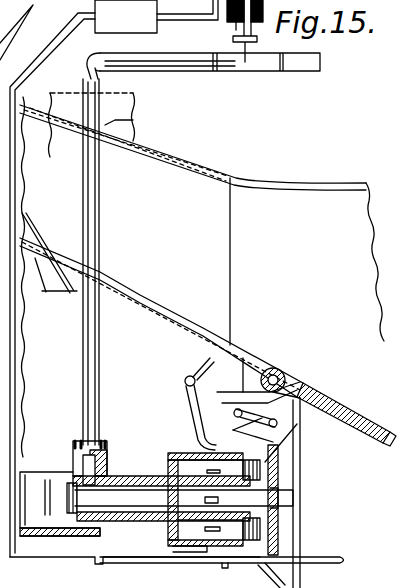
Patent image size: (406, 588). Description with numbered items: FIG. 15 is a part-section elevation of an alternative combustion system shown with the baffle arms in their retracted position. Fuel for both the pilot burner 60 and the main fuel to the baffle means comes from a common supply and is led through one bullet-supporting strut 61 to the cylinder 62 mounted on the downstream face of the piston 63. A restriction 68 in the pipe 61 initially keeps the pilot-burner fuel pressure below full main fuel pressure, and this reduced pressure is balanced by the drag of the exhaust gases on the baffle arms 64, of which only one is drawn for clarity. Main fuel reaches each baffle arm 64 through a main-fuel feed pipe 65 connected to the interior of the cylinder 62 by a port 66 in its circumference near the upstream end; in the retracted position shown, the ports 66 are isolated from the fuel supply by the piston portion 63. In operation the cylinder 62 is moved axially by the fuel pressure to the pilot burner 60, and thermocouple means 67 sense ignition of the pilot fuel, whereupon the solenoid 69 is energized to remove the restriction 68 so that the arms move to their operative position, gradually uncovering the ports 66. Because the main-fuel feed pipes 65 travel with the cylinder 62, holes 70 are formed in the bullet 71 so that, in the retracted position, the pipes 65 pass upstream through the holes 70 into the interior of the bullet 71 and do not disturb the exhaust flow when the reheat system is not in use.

The pilot burner 60 is at (290, 493).
The bullet-supporting strut 61 is at (182, 72).
The cylinder 62 is at (170, 458).
The piston 63 is at (278, 462).
The baffle arm 64 is at (366, 440).
The main-fuel feed pipe 65 is at (188, 374).
The port 66 is at (213, 450).
The thermocouple means 67 is at (313, 557).
The restriction 68 is at (250, 71).
The solenoid 69 is at (227, 22).
The hole 70 is at (240, 357).
The bullet 71 is at (165, 312).